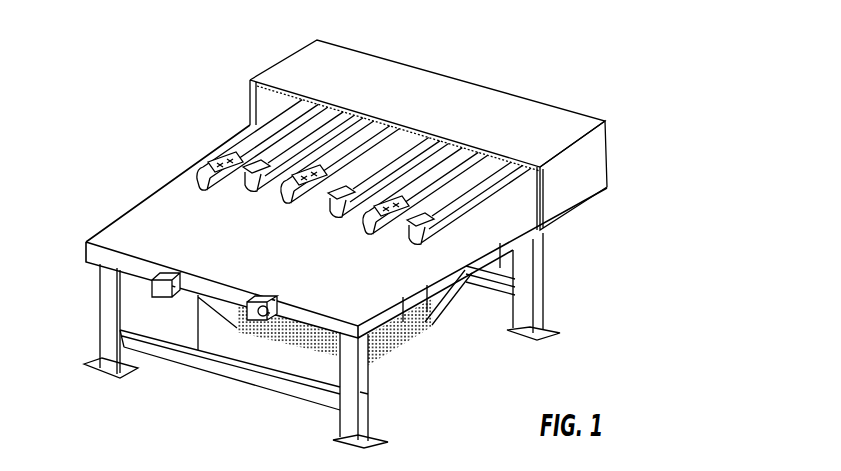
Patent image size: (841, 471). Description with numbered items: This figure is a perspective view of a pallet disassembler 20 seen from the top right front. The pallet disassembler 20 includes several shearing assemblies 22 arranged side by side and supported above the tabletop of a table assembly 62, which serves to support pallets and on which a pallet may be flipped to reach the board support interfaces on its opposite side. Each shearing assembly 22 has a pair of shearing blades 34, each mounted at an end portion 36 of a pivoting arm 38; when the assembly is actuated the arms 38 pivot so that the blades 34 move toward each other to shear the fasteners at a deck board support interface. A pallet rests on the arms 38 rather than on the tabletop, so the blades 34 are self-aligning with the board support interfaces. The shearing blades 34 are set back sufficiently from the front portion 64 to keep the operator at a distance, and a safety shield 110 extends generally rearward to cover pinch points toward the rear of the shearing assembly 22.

The pallet disassembler 20 is at (430, 119).
The shearing assembly 22 is at (242, 138).
The shearing blade 34 is at (208, 182).
The end portion 36 is at (250, 196).
The arm 38 is at (232, 145).
The table assembly 62 is at (545, 308).
The front portion 64 is at (92, 239).
The safety shield 110 is at (607, 185).